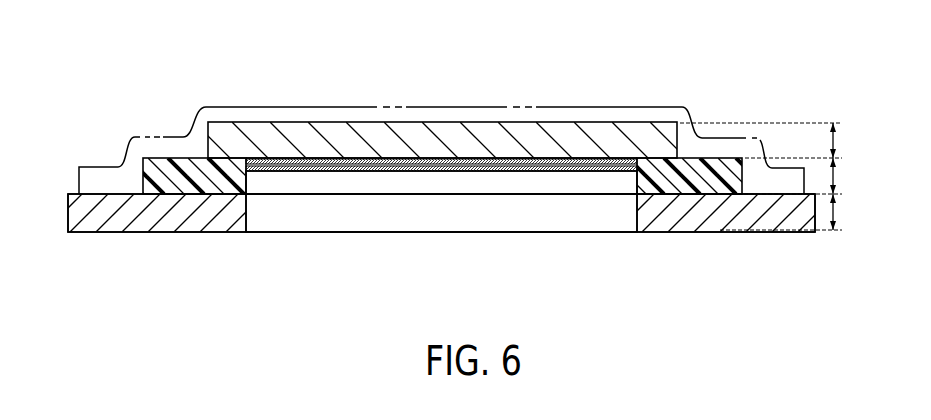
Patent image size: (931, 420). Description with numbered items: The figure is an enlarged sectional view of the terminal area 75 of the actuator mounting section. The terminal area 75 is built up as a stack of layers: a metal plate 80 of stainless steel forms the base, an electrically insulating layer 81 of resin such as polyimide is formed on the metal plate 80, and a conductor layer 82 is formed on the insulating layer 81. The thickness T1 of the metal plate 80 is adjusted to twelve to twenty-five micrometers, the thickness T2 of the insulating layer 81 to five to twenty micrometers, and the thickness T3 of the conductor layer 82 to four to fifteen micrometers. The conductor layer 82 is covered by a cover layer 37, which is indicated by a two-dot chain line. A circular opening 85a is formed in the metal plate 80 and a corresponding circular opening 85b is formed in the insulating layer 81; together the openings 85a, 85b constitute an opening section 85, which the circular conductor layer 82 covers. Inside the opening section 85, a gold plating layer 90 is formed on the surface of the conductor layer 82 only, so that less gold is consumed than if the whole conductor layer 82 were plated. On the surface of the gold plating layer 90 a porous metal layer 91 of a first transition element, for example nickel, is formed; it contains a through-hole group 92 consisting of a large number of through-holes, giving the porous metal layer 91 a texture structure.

The terminal area 75 is at (592, 70).
The cover layer 37 is at (625, 105).
The gold plating layer 90 is at (374, 153).
The conductor layer 82 is at (493, 132).
The insulating layer 81 is at (719, 160).
The porous metal layer 91 is at (357, 173).
The through-hole group 92 is at (527, 166).
The opening 85a is at (418, 218).
The opening 85b is at (465, 182).
The opening section 85 is at (392, 281).
The metal plate 80 is at (710, 218).
The thickness of metal plate T1 is at (835, 211).
The thickness of insulating layer T2 is at (835, 177).
The thickness of conductor layer T3 is at (835, 142).